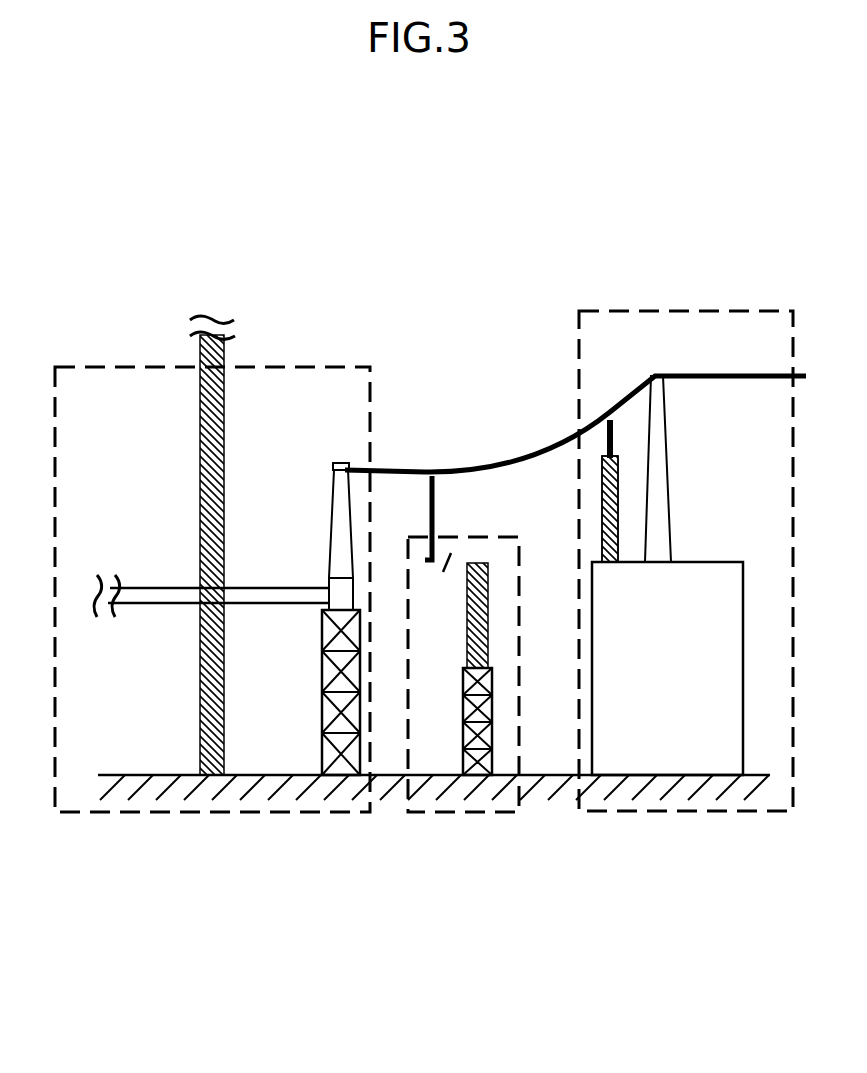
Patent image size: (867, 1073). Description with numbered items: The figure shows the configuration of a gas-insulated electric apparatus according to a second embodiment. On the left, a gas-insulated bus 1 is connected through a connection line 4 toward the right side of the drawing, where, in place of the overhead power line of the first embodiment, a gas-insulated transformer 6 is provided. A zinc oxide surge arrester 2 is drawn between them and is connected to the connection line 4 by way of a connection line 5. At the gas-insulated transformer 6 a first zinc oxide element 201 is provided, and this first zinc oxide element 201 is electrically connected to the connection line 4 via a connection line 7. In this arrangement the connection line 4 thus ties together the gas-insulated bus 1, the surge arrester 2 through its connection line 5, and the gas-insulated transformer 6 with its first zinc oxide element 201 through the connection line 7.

The gas-insulated bus 1 is at (80, 366).
The zinc oxide surge arrester 2 is at (458, 813).
The connection line 4 is at (515, 462).
The connection line 5 is at (437, 492).
The gas-insulated transformer 6 is at (620, 311).
The connection line 7 is at (605, 430).
The first zinc oxide element 201 is at (600, 520).